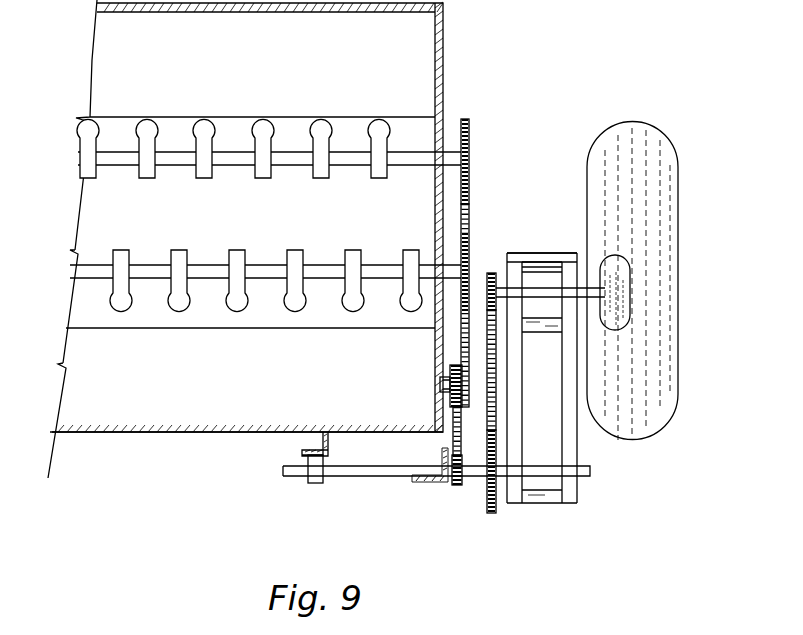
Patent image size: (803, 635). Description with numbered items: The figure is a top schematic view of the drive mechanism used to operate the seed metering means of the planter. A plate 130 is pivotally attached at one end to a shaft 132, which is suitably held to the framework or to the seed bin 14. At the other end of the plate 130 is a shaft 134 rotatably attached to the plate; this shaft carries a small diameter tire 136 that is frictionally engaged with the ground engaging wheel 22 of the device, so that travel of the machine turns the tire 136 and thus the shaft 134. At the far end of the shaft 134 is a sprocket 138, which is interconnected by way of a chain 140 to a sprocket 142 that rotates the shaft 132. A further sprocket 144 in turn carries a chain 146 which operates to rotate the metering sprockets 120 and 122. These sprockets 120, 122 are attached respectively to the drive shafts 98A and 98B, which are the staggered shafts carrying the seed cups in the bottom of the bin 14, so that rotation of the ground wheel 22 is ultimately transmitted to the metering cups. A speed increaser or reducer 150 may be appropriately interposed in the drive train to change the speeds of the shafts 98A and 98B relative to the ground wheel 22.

The bin 14 is at (88, 432).
The ground engaging wheel 22 is at (667, 140).
The drive shaft 98A is at (445, 295).
The drive shaft 98B is at (443, 150).
The sprocket 120 is at (471, 245).
The sprocket 122 is at (468, 124).
The plate 130 is at (545, 503).
The shaft 132 is at (333, 476).
The shaft 134 is at (537, 292).
The small diameter tire 136 is at (603, 262).
The sprocket 138 is at (491, 272).
The chain 140 is at (498, 378).
The sprocket 142 is at (490, 515).
The sprocket 144 is at (462, 486).
The chain 146 is at (452, 432).
The speed increaser or reducer 150 is at (448, 370).